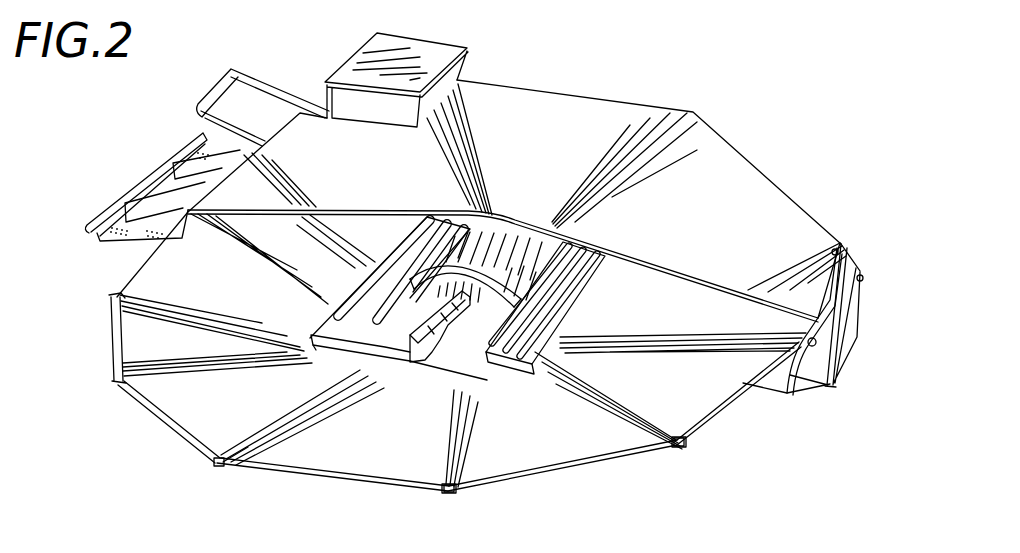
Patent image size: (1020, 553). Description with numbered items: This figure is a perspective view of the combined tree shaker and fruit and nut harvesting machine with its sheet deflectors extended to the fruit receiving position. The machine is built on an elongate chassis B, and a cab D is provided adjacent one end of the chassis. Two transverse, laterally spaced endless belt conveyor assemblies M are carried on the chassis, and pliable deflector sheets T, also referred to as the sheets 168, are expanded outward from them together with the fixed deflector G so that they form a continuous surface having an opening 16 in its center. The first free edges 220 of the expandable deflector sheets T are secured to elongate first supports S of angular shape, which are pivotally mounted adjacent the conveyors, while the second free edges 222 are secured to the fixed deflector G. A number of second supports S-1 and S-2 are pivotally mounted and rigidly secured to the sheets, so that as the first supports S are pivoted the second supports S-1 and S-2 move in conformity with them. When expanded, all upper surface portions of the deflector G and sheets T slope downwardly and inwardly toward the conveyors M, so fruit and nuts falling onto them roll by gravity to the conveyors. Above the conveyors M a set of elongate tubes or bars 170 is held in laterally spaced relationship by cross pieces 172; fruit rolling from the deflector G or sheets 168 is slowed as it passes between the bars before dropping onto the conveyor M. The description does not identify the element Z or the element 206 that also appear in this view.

The cab D is at (438, 45).
The fixed deflector G is at (560, 173).
The deflector sheets T is at (232, 300).
The ramp Z is at (108, 240).
The second free edges 222 is at (360, 211).
The first free edges 220 is at (300, 420).
The support frame 206 is at (848, 300).
The chassis B is at (805, 382).
The tubes or bars 170 is at (582, 288).
The cross pieces 172 is at (383, 313).
The opening 16 is at (560, 302).
The conveyor assemblies M is at (337, 338).
The sheets 168 is at (425, 437).
The first supports S is at (255, 440).
The second supports S-1 is at (447, 493).
The second supports S-2 is at (678, 444).